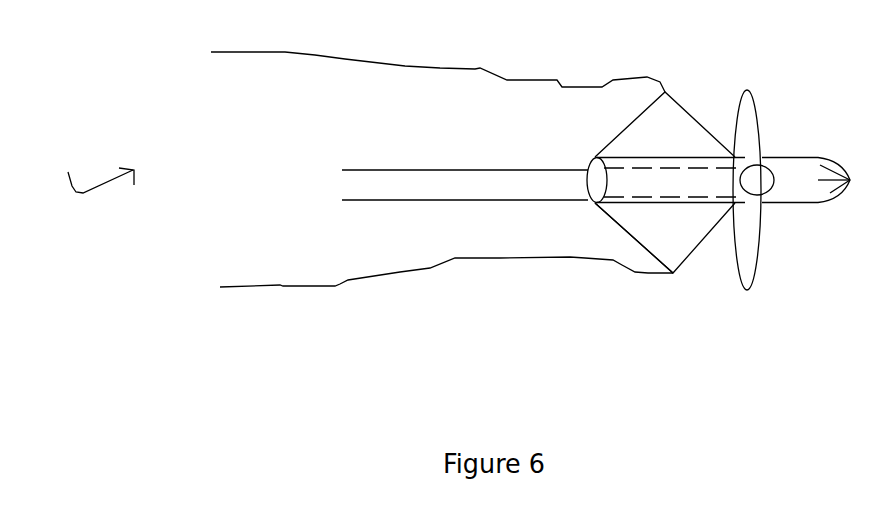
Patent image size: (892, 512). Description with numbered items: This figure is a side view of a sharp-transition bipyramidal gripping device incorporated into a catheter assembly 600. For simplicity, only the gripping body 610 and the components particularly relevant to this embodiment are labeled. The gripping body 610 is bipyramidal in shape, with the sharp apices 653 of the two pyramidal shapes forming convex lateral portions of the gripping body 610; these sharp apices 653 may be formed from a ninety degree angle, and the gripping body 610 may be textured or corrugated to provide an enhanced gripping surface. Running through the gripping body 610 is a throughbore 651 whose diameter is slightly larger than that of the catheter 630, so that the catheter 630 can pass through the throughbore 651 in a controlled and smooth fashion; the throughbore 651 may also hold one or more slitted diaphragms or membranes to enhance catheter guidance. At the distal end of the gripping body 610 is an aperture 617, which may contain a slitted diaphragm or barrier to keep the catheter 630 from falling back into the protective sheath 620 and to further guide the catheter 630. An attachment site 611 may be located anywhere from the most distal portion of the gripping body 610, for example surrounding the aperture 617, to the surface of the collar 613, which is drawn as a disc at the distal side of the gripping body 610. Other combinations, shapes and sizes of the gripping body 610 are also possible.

The catheter assembly 600 is at (93, 165).
The gripping body 610 is at (686, 238).
The attachment site 611 is at (665, 92).
The collar 613 is at (756, 112).
The aperture 617 is at (595, 183).
The protective sheath 620 is at (455, 70).
The catheter 630 is at (433, 169).
The throughbore 651 is at (688, 157).
The sharp apices 653 is at (673, 273).